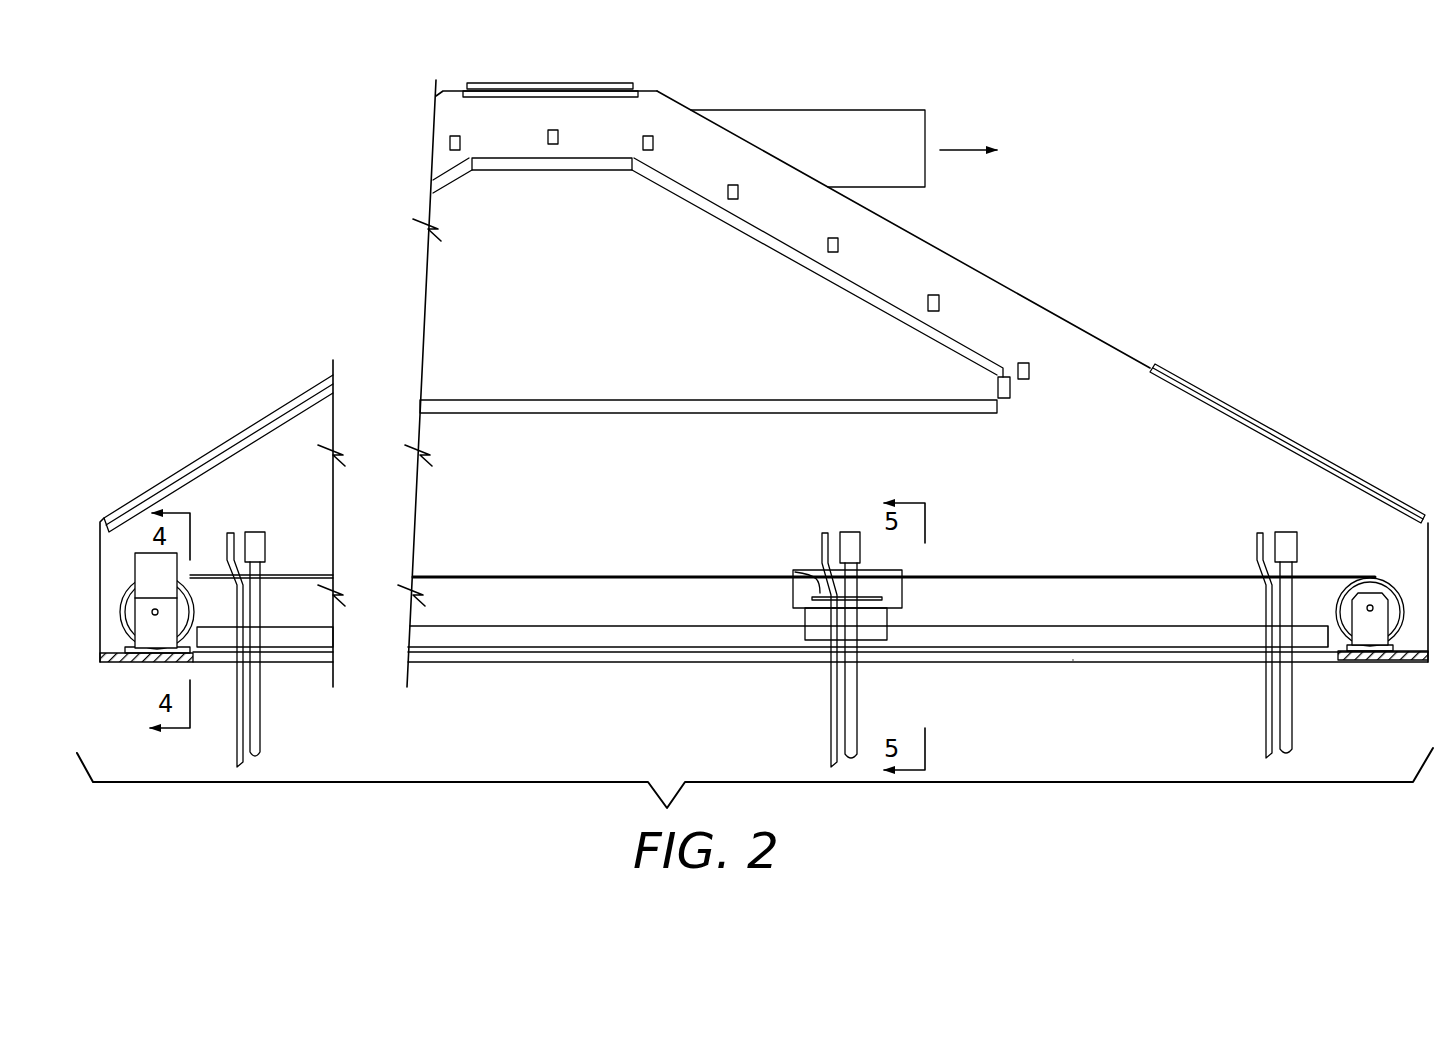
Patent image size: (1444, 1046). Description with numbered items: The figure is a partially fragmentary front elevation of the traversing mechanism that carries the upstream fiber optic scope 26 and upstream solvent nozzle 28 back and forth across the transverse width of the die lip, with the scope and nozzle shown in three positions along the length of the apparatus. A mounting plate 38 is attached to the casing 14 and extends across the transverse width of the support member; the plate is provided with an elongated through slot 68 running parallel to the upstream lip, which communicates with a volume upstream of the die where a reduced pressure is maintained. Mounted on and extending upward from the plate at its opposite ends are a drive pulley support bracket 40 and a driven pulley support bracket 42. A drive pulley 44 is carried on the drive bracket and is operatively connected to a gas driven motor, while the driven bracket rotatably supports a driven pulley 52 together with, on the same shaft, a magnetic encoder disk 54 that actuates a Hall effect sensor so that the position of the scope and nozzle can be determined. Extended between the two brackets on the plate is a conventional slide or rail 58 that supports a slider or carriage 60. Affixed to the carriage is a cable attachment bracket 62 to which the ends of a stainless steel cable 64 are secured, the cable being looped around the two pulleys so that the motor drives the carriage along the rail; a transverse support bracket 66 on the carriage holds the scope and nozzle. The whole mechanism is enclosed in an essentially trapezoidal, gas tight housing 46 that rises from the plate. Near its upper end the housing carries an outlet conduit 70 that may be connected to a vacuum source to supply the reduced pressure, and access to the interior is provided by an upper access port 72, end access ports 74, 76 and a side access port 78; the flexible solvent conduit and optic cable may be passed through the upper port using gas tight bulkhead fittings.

The casing 14 is at (1073, 660).
The upstream fiber optic scope 26 is at (262, 733).
The upstream solvent nozzle 28 is at (240, 718).
The mounting plate 38 is at (1397, 660).
The drive pulley support bracket 40 is at (1375, 652).
The driven pulley support bracket 42 is at (150, 655).
The drive pulley 44 is at (1395, 580).
The gas tight housing 46 is at (1103, 372).
The driven pulley 52 is at (195, 620).
The magnetic encoder disk 54 is at (130, 598).
The slide or rail 58 is at (533, 626).
The slider or carriage 60 is at (812, 622).
The cable attachment bracket 62 is at (895, 592).
The stainless steel cable 64 is at (1080, 577).
The guide member 66 is at (797, 572).
The elongated through slot 68 is at (298, 658).
The outlet conduit 70 is at (815, 110).
The upper access port 72 is at (612, 88).
The end access port 74 is at (258, 428).
The end access port 76 is at (1281, 440).
The side access port 78 is at (630, 337).